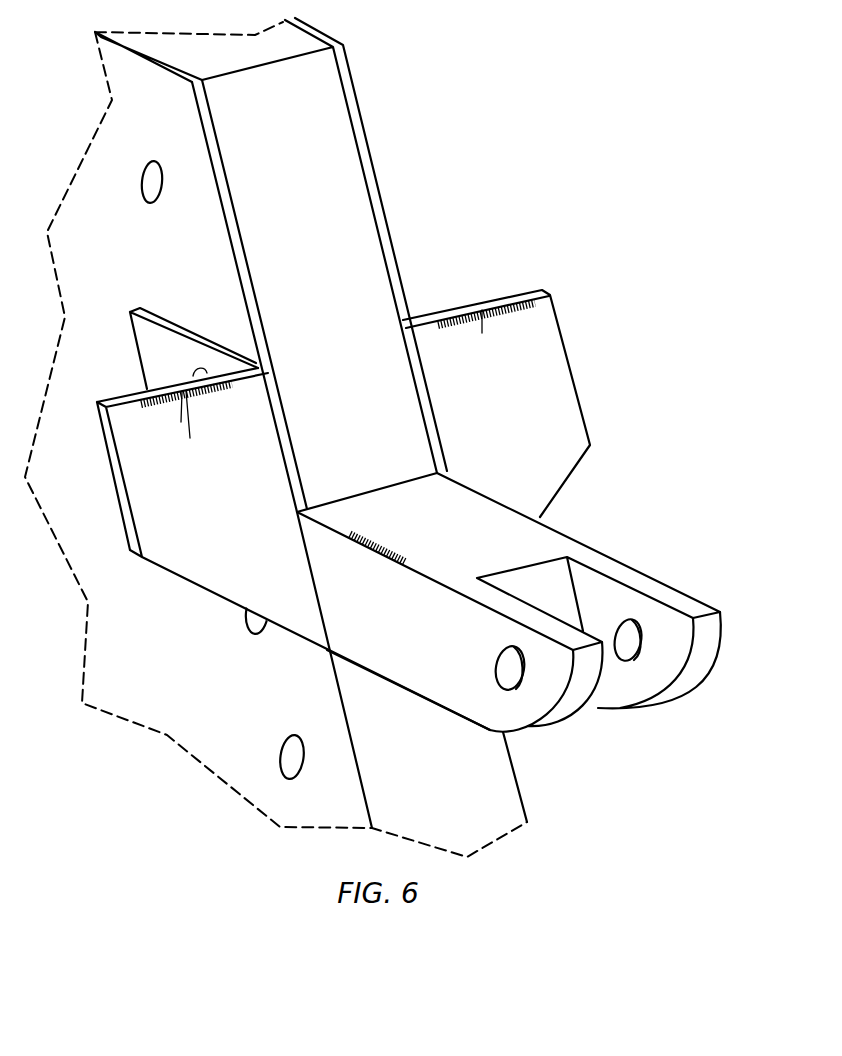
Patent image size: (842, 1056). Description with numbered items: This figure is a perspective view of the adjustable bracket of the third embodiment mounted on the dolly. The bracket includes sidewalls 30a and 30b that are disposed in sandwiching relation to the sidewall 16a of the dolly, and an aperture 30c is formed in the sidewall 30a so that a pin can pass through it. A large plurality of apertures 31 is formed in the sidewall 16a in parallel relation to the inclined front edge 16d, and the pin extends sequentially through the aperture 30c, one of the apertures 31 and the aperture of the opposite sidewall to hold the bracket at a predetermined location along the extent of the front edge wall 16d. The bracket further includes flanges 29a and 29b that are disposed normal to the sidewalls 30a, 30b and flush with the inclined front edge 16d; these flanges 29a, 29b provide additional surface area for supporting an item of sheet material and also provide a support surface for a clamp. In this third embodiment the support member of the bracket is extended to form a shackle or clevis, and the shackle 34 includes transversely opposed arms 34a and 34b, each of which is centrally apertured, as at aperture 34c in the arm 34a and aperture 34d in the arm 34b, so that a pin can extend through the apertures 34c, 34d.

The sidewall 16a is at (174, 238).
The inclined front edge 16d is at (287, 233).
The flange 29a is at (190, 495).
The flange 29b is at (482, 390).
The sidewall 30a is at (164, 322).
The sidewall 30b is at (405, 320).
The aperture 30c is at (195, 375).
The apertures 31 is at (143, 178).
The shackle 34 is at (514, 602).
The arm 34a is at (539, 673).
The arm 34b is at (654, 648).
The aperture 34c is at (499, 668).
The aperture 34d is at (641, 628).